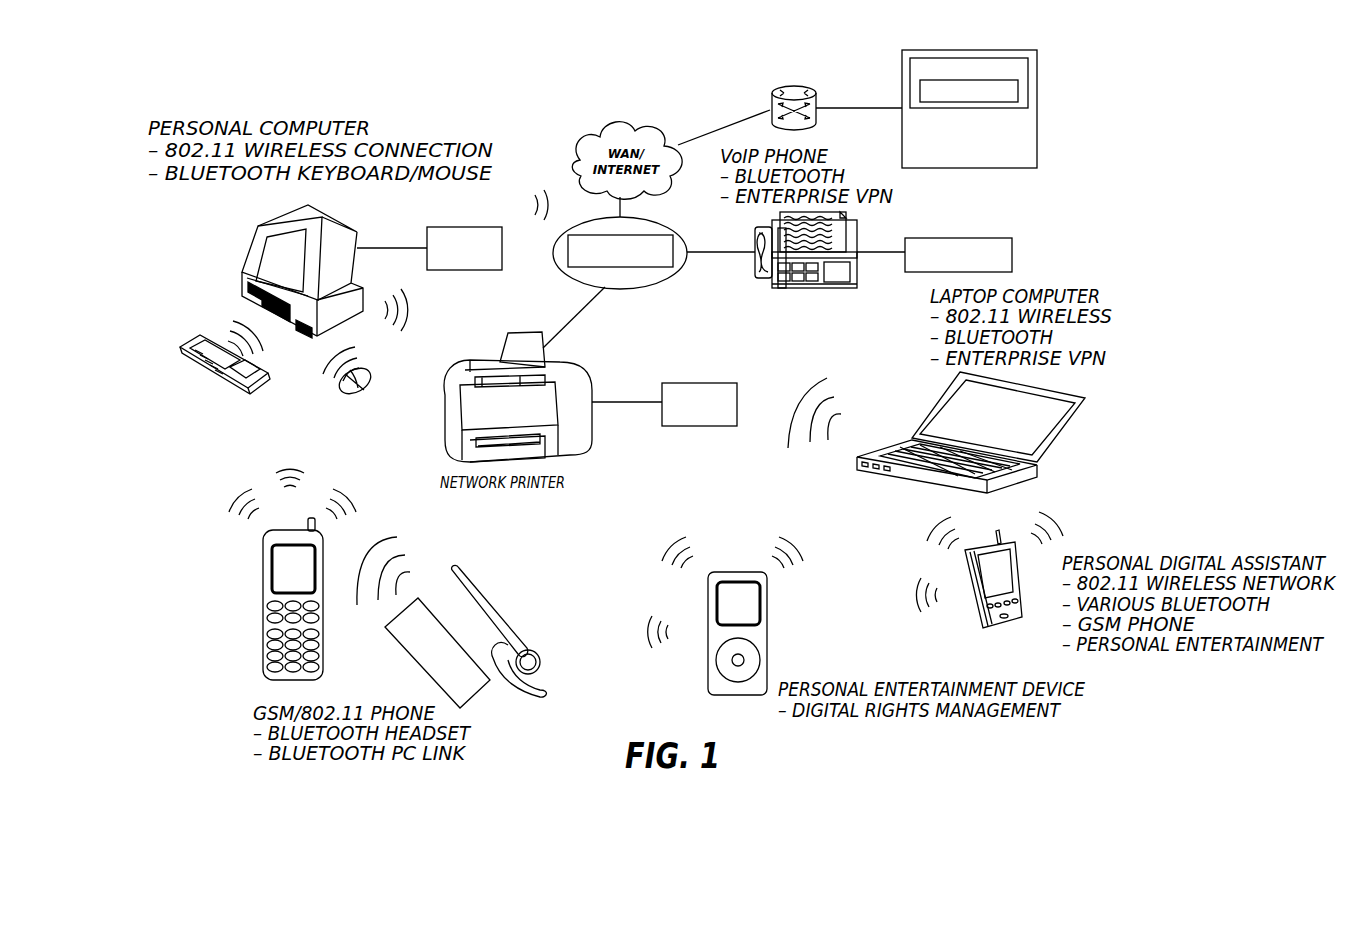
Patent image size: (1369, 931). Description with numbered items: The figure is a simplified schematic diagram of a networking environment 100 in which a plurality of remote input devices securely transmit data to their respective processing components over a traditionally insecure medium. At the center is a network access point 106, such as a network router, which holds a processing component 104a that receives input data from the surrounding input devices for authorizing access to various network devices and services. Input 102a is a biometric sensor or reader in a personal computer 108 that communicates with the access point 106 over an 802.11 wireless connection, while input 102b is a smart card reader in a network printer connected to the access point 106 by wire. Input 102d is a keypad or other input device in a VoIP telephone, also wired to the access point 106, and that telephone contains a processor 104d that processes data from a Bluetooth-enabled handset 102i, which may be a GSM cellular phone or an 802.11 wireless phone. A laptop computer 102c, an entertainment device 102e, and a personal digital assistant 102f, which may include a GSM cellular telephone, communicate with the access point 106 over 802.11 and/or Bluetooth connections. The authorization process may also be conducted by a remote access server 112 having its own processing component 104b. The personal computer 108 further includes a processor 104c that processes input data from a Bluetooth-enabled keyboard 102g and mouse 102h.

The networking environment 100 is at (594, 106).
The network access point 106 is at (658, 218).
The processing component 104a is at (650, 267).
The processing component 104b is at (1018, 91).
The processor 104c is at (258, 250).
The processor 104d is at (998, 238).
The remote access server 112 is at (1002, 50).
The personal computer 108 is at (338, 225).
The input 102a is at (488, 270).
The input 102b is at (717, 383).
The laptop computer 102c is at (1062, 432).
The input 102d is at (808, 288).
The entertainment device 102e is at (768, 628).
The personal digital assistant 102f is at (980, 630).
The keyboard 102g is at (262, 388).
The mouse 102h is at (366, 372).
The handset 102i is at (264, 577).